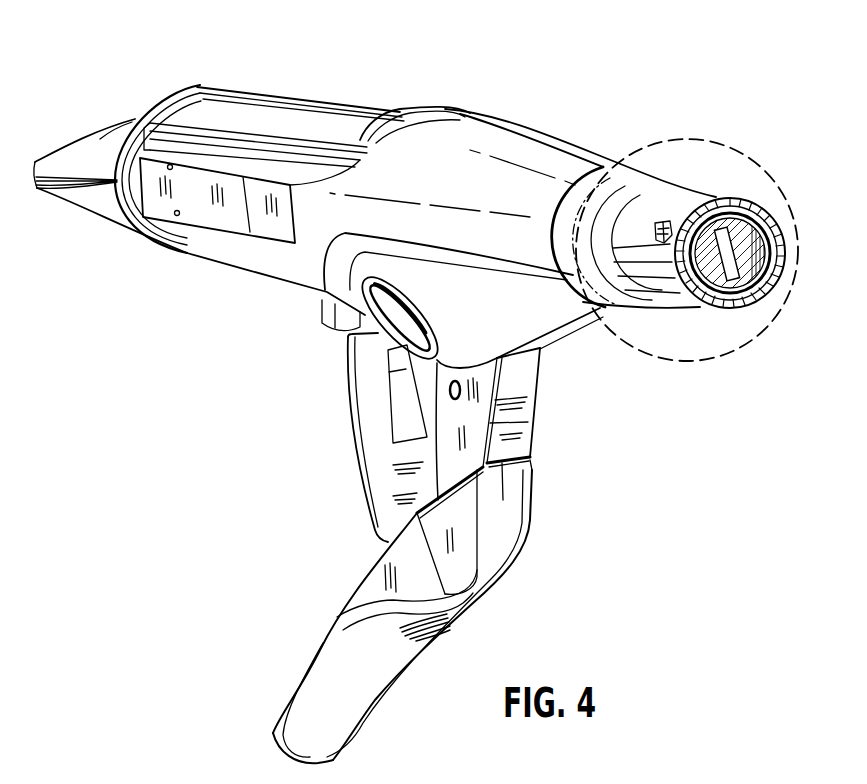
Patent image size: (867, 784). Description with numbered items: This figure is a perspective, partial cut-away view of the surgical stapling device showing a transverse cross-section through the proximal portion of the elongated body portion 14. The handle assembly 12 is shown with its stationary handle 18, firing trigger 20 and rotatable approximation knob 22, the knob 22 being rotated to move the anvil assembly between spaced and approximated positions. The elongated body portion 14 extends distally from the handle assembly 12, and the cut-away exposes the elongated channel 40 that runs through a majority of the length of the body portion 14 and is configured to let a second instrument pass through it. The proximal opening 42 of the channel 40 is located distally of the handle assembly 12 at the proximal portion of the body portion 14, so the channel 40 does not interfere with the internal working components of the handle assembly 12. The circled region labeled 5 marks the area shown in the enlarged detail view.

The handle assembly 12 is at (294, 86).
The elongated body portion 14 is at (698, 180).
The stationary handle 18 is at (213, 247).
The firing trigger 20 is at (508, 570).
The rotatable approximation knob 22 is at (65, 160).
The elongated channel 40 is at (708, 220).
The proximal opening 42 is at (658, 222).
The detail view circle for FIG. 5 is at (683, 135).